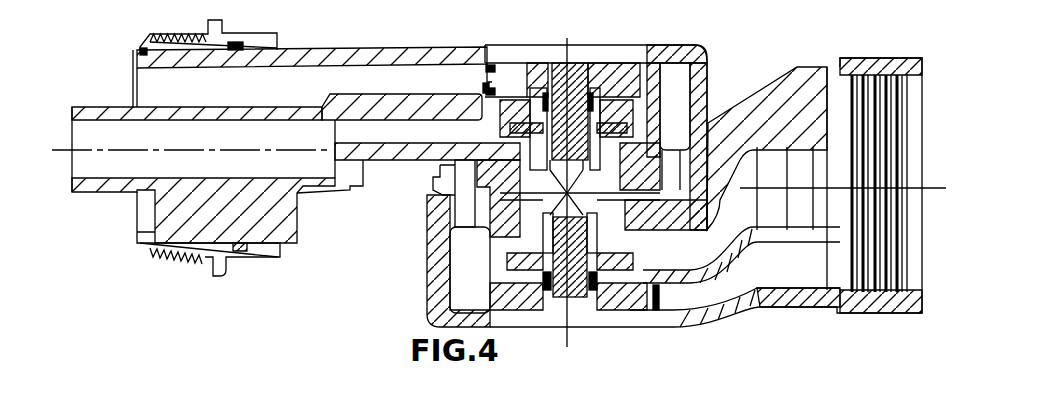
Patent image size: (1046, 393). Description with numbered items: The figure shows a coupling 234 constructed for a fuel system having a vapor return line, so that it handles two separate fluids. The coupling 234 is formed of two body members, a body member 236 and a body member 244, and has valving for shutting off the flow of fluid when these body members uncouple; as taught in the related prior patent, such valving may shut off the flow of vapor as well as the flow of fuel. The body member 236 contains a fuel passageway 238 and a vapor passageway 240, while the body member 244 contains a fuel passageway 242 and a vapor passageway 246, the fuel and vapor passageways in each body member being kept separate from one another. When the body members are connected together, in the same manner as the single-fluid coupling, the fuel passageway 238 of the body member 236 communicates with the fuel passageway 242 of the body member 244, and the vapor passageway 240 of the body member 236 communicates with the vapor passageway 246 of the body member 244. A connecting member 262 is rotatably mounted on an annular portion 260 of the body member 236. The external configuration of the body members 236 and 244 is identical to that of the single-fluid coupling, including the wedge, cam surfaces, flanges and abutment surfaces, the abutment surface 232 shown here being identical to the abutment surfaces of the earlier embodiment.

The abutment surface 232 is at (710, 123).
The coupling 234 is at (774, 30).
The body member 236 is at (709, 56).
The fuel passageway 238 is at (416, 118).
The vapor passageway 240 is at (349, 77).
The fuel passageway 242 is at (692, 258).
The body member 244 is at (430, 289).
The vapor passageway 246 is at (752, 285).
The annular portion 260 is at (285, 50).
The connecting member 262 is at (203, 35).